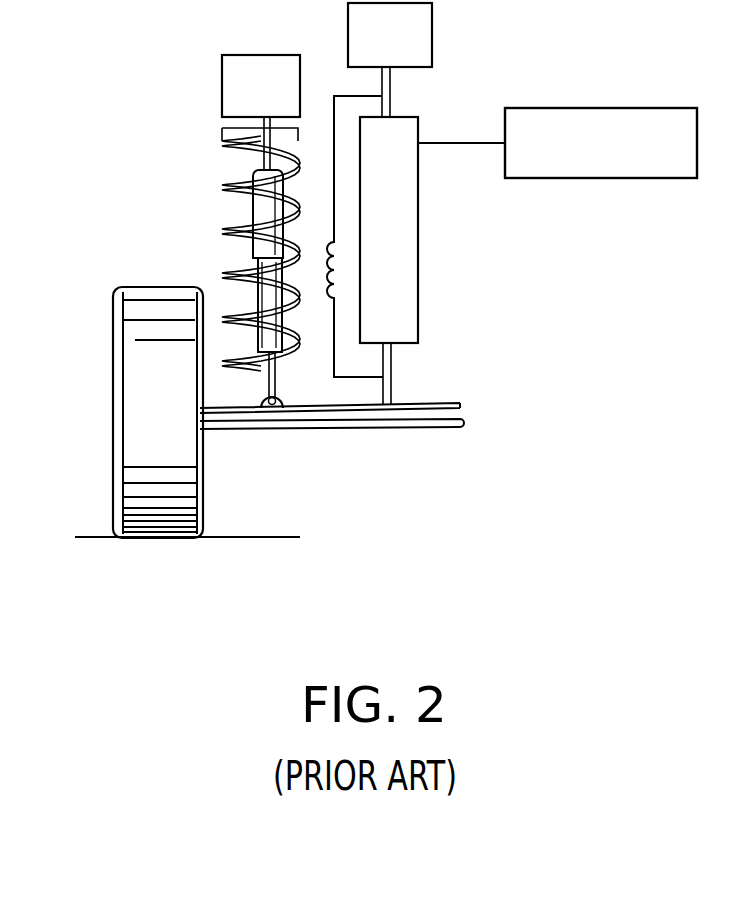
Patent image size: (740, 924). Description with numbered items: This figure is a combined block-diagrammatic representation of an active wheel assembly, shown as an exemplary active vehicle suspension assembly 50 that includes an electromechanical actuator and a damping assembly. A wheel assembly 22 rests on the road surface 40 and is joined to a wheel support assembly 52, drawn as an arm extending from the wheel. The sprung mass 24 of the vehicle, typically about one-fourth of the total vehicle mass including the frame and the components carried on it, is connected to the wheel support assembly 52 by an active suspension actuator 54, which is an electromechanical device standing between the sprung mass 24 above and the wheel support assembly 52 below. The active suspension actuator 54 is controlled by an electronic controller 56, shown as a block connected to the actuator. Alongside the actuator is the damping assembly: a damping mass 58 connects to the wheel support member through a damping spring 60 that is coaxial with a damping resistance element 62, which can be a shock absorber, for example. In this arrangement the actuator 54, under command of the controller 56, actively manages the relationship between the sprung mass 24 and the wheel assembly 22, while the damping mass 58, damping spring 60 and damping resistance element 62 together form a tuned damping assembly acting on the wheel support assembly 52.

The wheel assembly 22 is at (104, 391).
The sprung mass 24 is at (432, 30).
The road surface 40 is at (268, 536).
The active vehicle suspension assembly 50 is at (146, 172).
The wheel support assembly 52 is at (345, 431).
The active suspension actuator 54 is at (405, 200).
The electronic controller 56 is at (625, 178).
The damping mass 58 is at (222, 82).
The damping spring 60 is at (242, 188).
The damping resistance element 62 is at (247, 221).